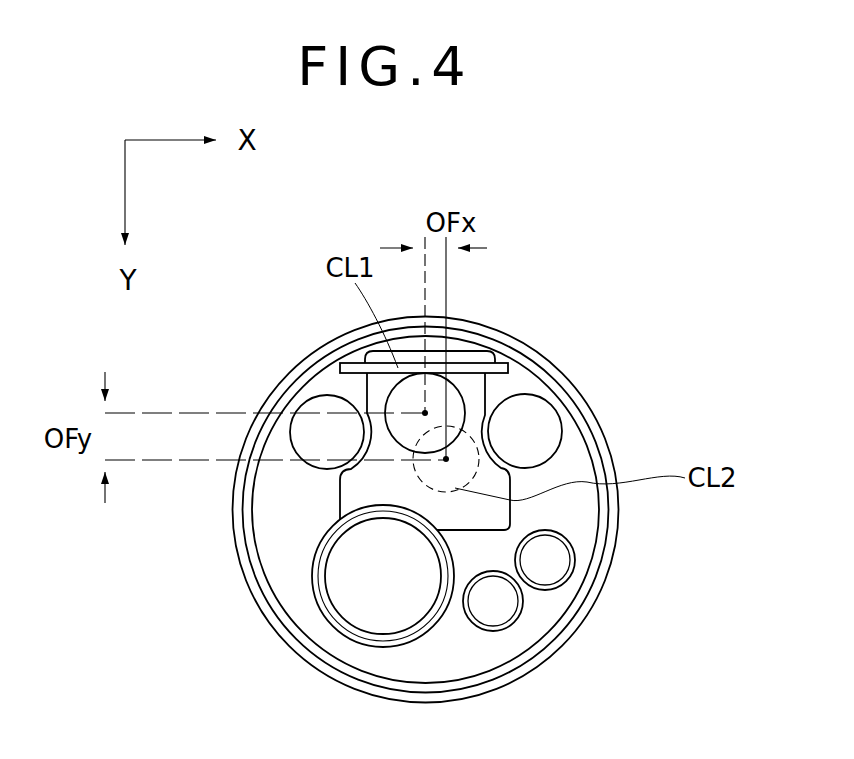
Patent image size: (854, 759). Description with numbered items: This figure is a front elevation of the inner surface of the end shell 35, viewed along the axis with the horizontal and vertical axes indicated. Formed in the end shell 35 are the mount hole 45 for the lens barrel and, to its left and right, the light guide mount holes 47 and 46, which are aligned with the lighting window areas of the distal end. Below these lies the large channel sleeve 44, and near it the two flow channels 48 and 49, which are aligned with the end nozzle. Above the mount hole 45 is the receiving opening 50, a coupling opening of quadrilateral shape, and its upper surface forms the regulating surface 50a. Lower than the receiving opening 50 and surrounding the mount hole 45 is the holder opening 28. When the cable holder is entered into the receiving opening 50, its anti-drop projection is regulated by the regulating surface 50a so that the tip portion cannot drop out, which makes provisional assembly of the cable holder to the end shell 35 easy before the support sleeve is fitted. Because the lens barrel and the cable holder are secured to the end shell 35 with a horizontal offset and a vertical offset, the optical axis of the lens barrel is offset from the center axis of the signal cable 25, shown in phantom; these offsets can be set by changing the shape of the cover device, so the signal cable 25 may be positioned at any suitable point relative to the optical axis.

The signal cable 25 is at (462, 490).
The holder opening 28 is at (340, 512).
The end shell 35 is at (548, 352).
The channel sleeve 44 is at (320, 604).
The mount hole 45 is at (463, 400).
The light guide mount hole 46 is at (548, 457).
The light guide mount hole 47 is at (337, 403).
The flow channel 48 is at (555, 544).
The flow channel 49 is at (500, 585).
The receiving opening 50 is at (357, 368).
The regulating surface 50a is at (450, 349).